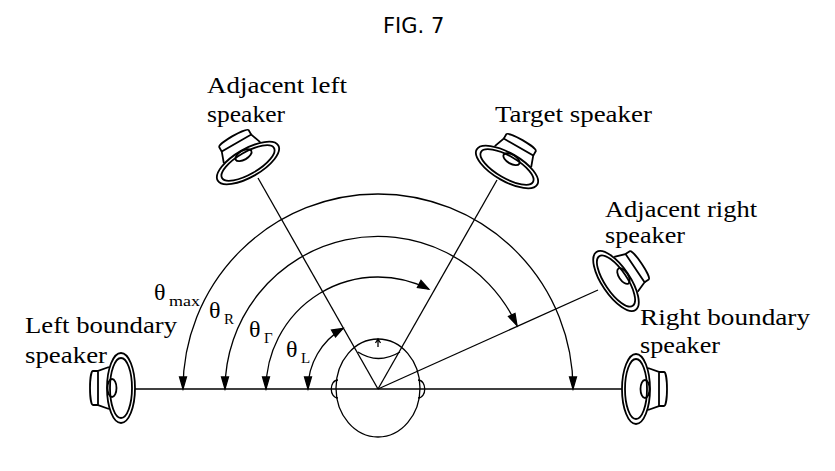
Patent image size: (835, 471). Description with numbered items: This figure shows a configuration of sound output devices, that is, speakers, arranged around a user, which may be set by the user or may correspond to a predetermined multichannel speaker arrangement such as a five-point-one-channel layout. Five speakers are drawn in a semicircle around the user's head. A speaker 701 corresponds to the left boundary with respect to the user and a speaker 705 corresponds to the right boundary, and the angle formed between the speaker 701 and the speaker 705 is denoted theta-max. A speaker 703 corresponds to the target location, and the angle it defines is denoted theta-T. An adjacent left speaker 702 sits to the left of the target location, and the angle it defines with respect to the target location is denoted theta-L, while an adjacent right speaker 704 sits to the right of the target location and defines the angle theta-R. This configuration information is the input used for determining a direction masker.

The speaker corresponding to a left boundary 701 is at (89, 389).
The adjacent left speaker 702 is at (221, 146).
The speaker corresponding to a target location 703 is at (478, 148).
The adjacent right speaker 704 is at (645, 267).
The speaker corresponding to a right boundary 705 is at (667, 389).